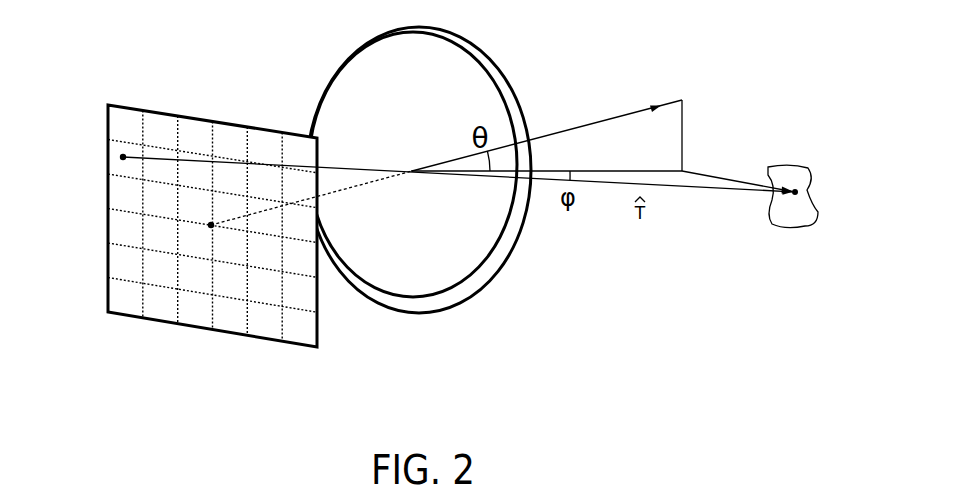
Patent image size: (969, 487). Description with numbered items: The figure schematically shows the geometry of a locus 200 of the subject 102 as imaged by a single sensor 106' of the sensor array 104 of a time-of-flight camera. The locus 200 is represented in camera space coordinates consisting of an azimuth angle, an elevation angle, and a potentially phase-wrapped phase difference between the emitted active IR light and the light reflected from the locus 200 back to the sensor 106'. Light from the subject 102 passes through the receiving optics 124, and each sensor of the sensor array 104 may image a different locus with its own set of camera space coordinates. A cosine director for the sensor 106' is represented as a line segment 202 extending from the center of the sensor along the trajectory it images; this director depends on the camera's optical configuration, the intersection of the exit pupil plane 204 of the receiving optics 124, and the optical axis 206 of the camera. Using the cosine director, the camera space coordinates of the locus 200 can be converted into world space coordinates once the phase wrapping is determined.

The receiving optics 124 is at (355, 46).
The sensor array 104 is at (167, 327).
The sensor 106' is at (429, 156).
The exit pupil plane 204 is at (405, 161).
The optical axis 206 is at (541, 136).
The line segment 202 is at (627, 184).
The subject 102 is at (797, 165).
The locus 200 is at (804, 200).